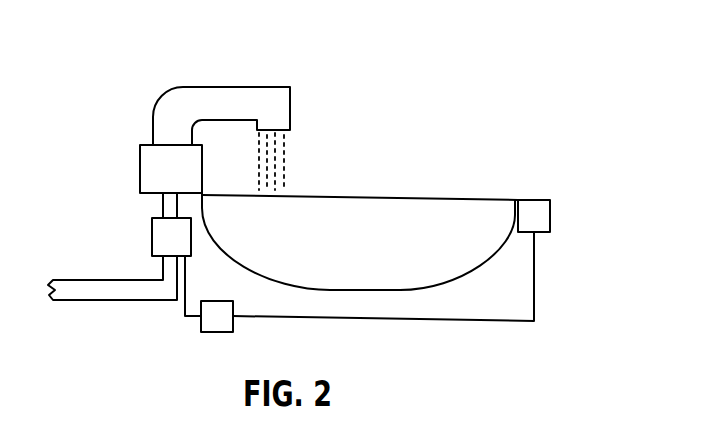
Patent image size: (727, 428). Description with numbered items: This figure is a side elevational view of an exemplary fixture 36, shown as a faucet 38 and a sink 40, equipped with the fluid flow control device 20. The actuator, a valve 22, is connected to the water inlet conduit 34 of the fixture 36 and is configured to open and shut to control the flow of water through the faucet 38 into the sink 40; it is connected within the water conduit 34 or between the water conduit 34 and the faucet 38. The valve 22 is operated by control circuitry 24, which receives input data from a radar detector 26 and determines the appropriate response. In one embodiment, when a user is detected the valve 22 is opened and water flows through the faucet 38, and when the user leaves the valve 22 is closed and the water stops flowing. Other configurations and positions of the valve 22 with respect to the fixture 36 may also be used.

The fluid flow control device 20 is at (545, 296).
The valve 22 is at (152, 232).
The control circuitry 24 is at (215, 301).
The radar detector 26 is at (550, 218).
The water inlet conduit 34 is at (110, 280).
The fixture 36 is at (373, 152).
The faucet 38 is at (246, 87).
The sink 40 is at (443, 198).